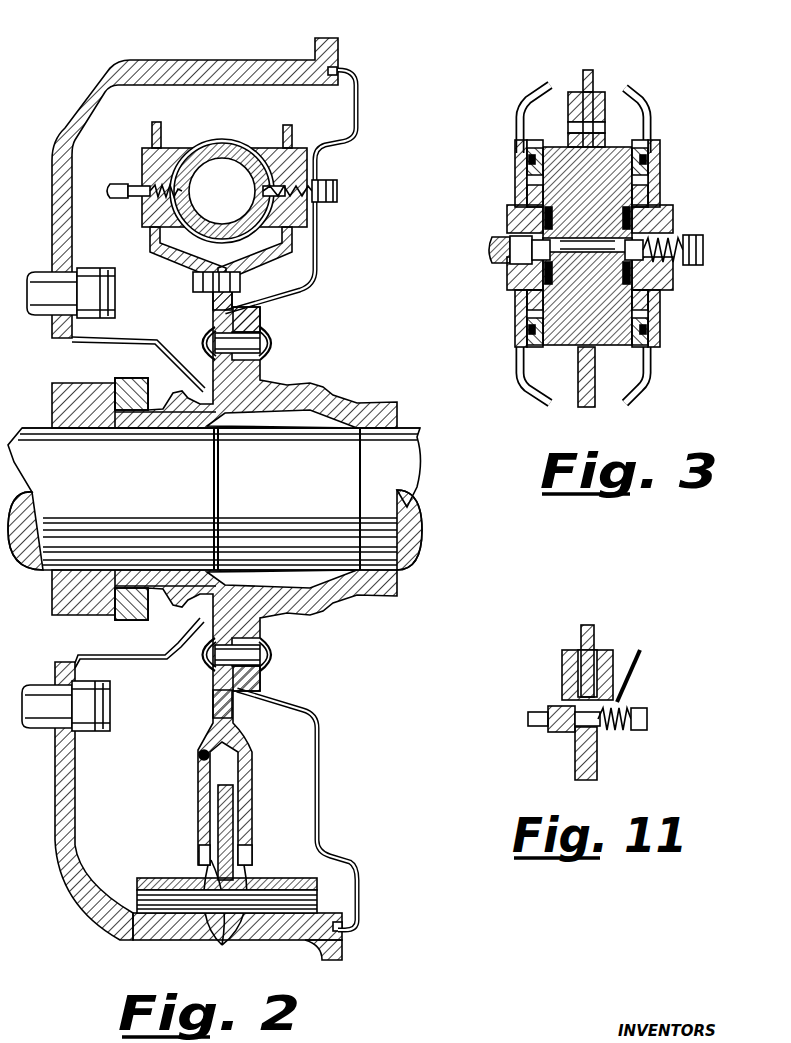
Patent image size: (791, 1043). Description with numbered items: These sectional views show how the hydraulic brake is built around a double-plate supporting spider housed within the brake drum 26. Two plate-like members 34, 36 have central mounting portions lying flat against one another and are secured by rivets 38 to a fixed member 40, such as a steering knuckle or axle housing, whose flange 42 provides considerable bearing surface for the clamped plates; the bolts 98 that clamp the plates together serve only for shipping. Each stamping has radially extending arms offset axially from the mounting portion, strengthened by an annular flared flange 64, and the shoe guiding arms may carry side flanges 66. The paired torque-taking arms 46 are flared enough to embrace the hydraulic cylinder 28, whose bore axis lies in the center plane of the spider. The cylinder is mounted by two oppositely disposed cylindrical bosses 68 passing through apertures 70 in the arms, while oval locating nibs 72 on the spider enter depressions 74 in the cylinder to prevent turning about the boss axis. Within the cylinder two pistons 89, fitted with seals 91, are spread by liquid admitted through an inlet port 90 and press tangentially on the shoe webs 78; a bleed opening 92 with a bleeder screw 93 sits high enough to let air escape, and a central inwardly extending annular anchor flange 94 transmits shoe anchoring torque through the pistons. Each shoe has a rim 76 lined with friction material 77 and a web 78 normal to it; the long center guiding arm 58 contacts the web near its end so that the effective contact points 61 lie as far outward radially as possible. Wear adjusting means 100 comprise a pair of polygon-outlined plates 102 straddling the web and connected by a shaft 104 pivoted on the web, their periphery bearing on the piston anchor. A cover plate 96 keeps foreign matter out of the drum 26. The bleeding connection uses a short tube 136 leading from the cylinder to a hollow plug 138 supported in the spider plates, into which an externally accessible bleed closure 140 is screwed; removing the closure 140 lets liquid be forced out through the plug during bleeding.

In FIG. 2, the housing 26 is at (200, 62).
In FIG. 2, the hydraulic cylinder 28 is at (192, 148).
In FIG. 2, the plate-like member 34 is at (222, 305).
In FIG. 2, the plate-like member 36 is at (245, 310).
In FIG. 2, the rivets 38 is at (278, 346).
In FIG. 2, the fixed member 40 is at (355, 595).
In FIG. 2, the flange 42 is at (262, 683).
In FIG. 2, the torque-taking arms 46 is at (170, 255).
In FIG. 2, the shoe guiding arm 58 is at (250, 760).
In FIG. 2, the effective contact points 61 is at (222, 945).
In FIG. 2, the annular flared strengthening flange 64 is at (203, 748).
In FIG. 2, the side flanges 66 is at (250, 852).
In FIG. 2, the bosses 68 is at (142, 165).
In FIG. 2, the apertures 70 is at (296, 142).
In FIG. 3, the locating nibs 72 is at (528, 167).
In FIG. 3, the depressions 74 is at (517, 185).
In FIG. 2, the rim 76 is at (135, 875).
In FIG. 2, the friction material 77 is at (112, 940).
In FIG. 2, the web 78 is at (222, 825).
In FIG. 3, the web 78 is at (584, 85).
In FIG. 3, the pistons 89 is at (560, 150).
In FIG. 3, the inlet port 90 is at (496, 250).
In FIG. 3, the seals 91 is at (535, 212).
In FIG. 3, the bleed opening 92 is at (642, 228).
In FIG. 3, the bleeder screw 93 is at (702, 245).
In FIG. 2, the anchor flange 94 is at (218, 158).
In FIG. 3, the anchor flange 94 is at (640, 272).
In FIG. 2, the cover plate 96 is at (320, 772).
In FIG. 2, the bolts 98 is at (198, 284).
In FIG. 3, the adjusting means 100 is at (600, 122).
In FIG. 3, the polygon-outlined plates 102 is at (592, 88).
In FIG. 3, the shaft 104 is at (590, 135).
In FIG. 11, the short tube 136 is at (538, 708).
In FIG. 11, the hollow plug 138 is at (572, 735).
In FIG. 11, the bleed closure 140 is at (624, 702).